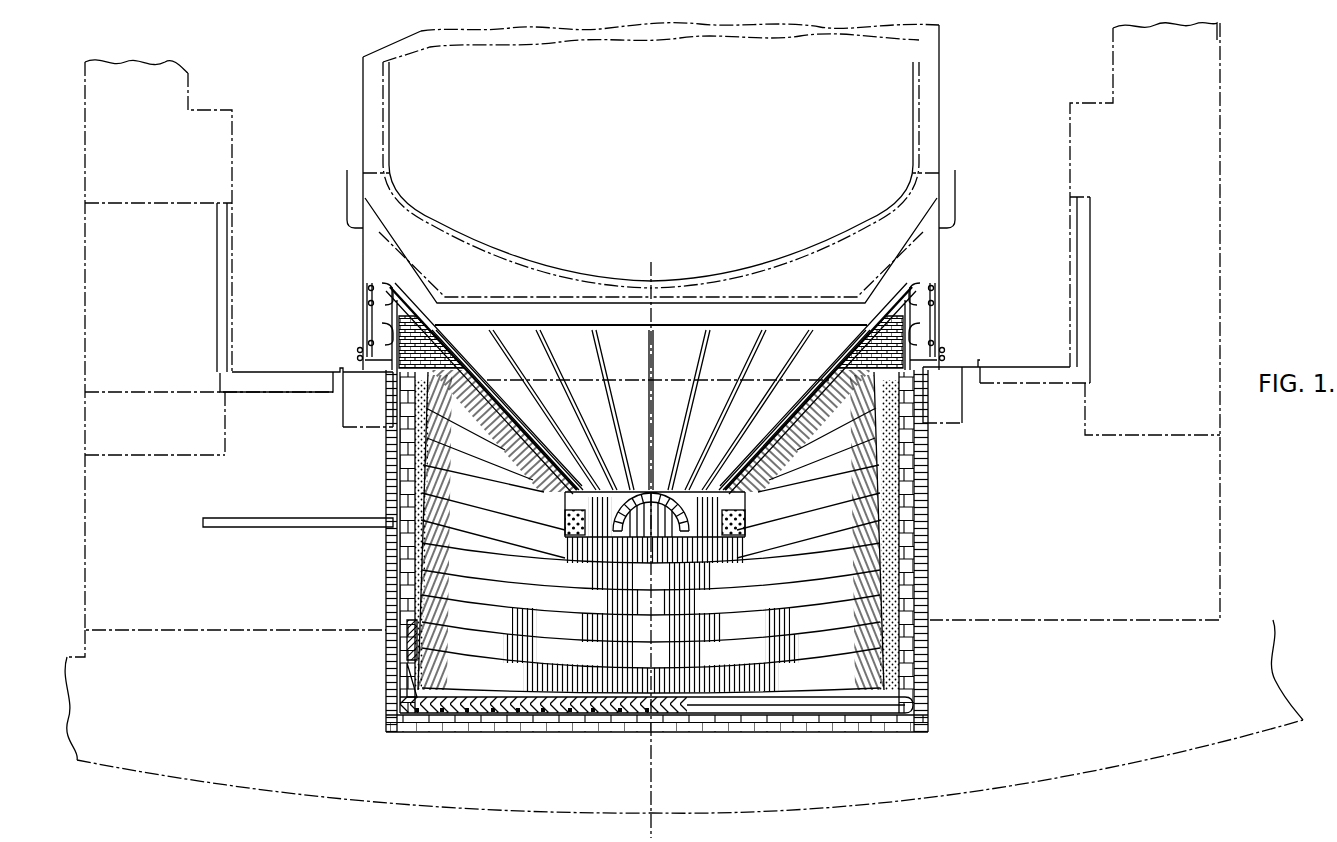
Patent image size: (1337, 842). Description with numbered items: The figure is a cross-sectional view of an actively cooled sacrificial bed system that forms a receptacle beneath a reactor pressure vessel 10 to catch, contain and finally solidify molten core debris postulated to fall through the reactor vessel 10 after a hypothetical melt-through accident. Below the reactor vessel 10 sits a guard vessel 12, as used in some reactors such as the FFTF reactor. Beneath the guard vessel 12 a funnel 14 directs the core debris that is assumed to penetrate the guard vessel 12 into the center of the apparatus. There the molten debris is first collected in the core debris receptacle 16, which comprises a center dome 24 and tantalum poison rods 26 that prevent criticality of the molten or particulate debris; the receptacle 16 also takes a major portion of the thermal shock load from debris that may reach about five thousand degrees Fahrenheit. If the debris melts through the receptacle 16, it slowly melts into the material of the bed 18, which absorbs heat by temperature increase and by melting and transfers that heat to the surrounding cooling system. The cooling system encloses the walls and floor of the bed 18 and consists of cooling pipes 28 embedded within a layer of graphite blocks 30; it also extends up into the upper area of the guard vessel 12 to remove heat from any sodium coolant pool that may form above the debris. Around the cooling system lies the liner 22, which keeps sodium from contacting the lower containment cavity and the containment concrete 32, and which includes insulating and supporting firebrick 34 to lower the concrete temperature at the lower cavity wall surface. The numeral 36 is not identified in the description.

The reactor pressure vessel 10 is at (912, 101).
The guard vessel 12 is at (920, 199).
The funnel 14 is at (691, 361).
The core debris receptacle 16 is at (716, 555).
The bed 18 is at (539, 608).
The liner 22 is at (927, 567).
The center dome 24 is at (650, 491).
The tantalum poison rods 26 is at (735, 512).
The cooling pipes 28 is at (398, 692).
The graphite blocks 30 is at (388, 487).
The containment concrete 32 is at (312, 615).
The insulating and supporting firebrick 34 is at (388, 563).
The mounting bracket 36 is at (367, 329).